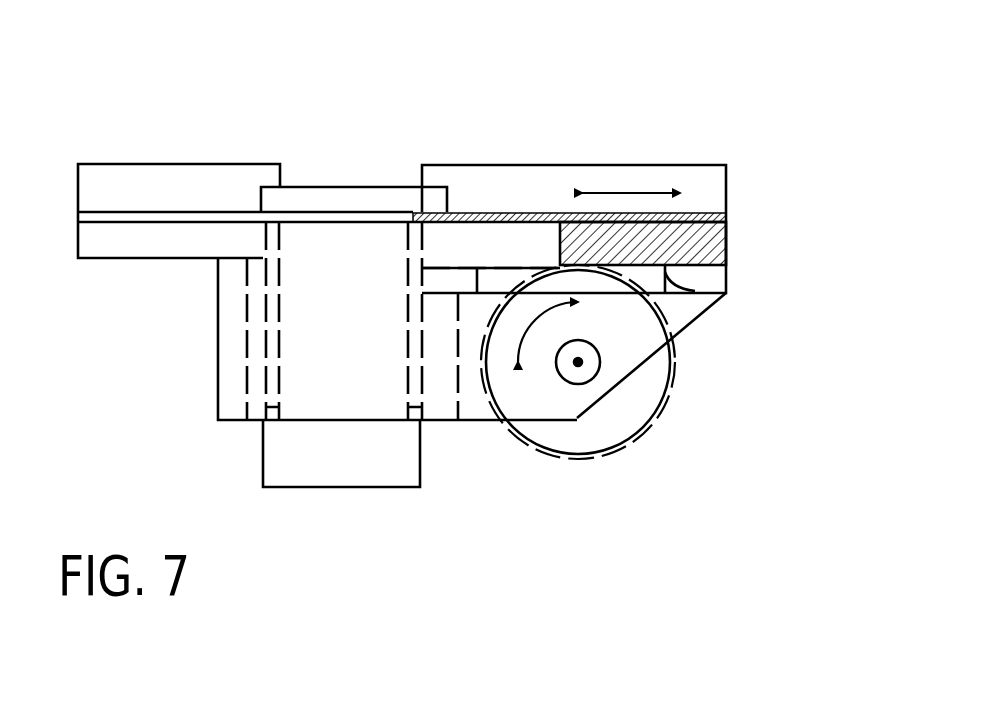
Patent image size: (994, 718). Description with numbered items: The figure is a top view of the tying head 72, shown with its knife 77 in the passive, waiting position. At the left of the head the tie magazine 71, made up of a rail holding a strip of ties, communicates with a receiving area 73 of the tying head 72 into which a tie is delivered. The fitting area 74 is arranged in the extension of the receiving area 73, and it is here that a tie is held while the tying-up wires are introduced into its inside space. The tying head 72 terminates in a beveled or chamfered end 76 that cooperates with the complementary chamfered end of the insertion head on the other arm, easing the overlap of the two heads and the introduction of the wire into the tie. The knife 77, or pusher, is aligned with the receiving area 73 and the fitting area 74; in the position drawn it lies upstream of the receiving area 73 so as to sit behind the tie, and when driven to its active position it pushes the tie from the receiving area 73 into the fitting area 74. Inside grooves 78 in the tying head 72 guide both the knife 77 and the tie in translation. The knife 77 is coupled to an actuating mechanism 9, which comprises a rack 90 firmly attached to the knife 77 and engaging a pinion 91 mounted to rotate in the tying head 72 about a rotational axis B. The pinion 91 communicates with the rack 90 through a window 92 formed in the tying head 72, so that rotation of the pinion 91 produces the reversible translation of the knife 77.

The actuating mechanism 9 is at (685, 443).
The tie magazine 71 is at (352, 440).
The tying head 72 is at (575, 172).
The receiving area 73 is at (345, 205).
The fitting area 74 is at (141, 205).
The beveled or chamfered end 76 is at (90, 188).
The knife 77 is at (490, 213).
The inside grooves 78 is at (218, 210).
The rack 90 is at (728, 248).
The pinion 91 is at (598, 432).
The window 92 is at (728, 300).
The rotational axis B is at (578, 363).